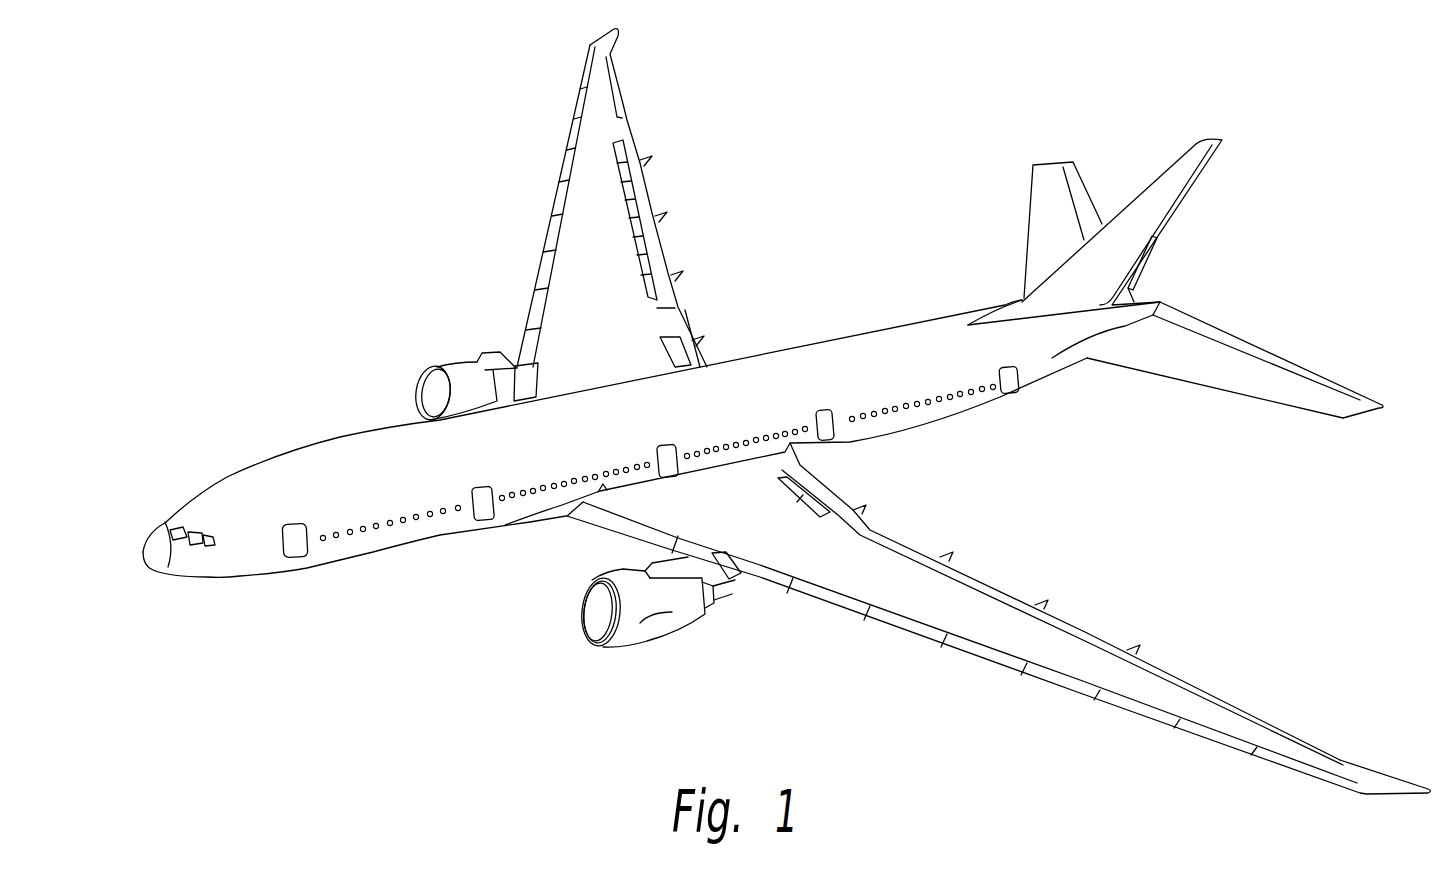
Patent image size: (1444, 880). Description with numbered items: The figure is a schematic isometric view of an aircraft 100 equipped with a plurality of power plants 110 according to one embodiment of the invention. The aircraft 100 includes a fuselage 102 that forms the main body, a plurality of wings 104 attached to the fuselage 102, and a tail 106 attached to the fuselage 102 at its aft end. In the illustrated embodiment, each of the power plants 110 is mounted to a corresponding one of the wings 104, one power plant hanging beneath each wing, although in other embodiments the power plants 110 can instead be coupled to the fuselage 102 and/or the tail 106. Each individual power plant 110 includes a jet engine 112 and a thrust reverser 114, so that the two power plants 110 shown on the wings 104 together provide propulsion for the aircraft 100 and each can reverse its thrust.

The aircraft 100 is at (172, 371).
The fuselage 102 is at (367, 543).
The wing 104 is at (612, 215).
The tail 106 is at (1160, 183).
The power plant 110 is at (592, 661).
The jet engine 112 is at (640, 623).
The thrust reverser 114 is at (685, 613).